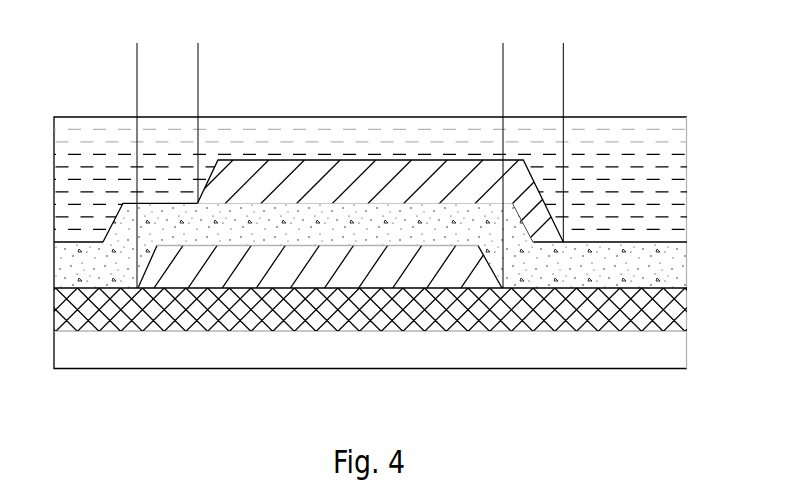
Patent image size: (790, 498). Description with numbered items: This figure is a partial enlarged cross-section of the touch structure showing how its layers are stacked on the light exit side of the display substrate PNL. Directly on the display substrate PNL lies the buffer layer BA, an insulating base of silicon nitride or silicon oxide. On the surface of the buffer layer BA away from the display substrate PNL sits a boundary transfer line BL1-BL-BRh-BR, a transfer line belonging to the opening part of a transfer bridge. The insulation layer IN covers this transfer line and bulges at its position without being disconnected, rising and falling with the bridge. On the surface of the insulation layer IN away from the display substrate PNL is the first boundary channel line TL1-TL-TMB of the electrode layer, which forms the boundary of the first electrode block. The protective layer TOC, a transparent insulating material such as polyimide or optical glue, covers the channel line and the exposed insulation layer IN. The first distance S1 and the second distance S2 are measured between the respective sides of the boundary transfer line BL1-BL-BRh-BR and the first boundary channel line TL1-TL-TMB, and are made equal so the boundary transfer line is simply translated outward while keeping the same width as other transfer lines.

The first distance S1 is at (198, 54).
The second distance S2 is at (563, 54).
The first boundary channel line of the electrode layer TL1-TL-TMB is at (352, 175).
The protective layer TOC is at (638, 142).
The display substrate PNL is at (198, 361).
The buffer layer BA is at (277, 312).
The boundary transfer line of the transfer bridge opening part BL1-BL-BRh-BR is at (418, 272).
The insulation layer IN is at (643, 272).